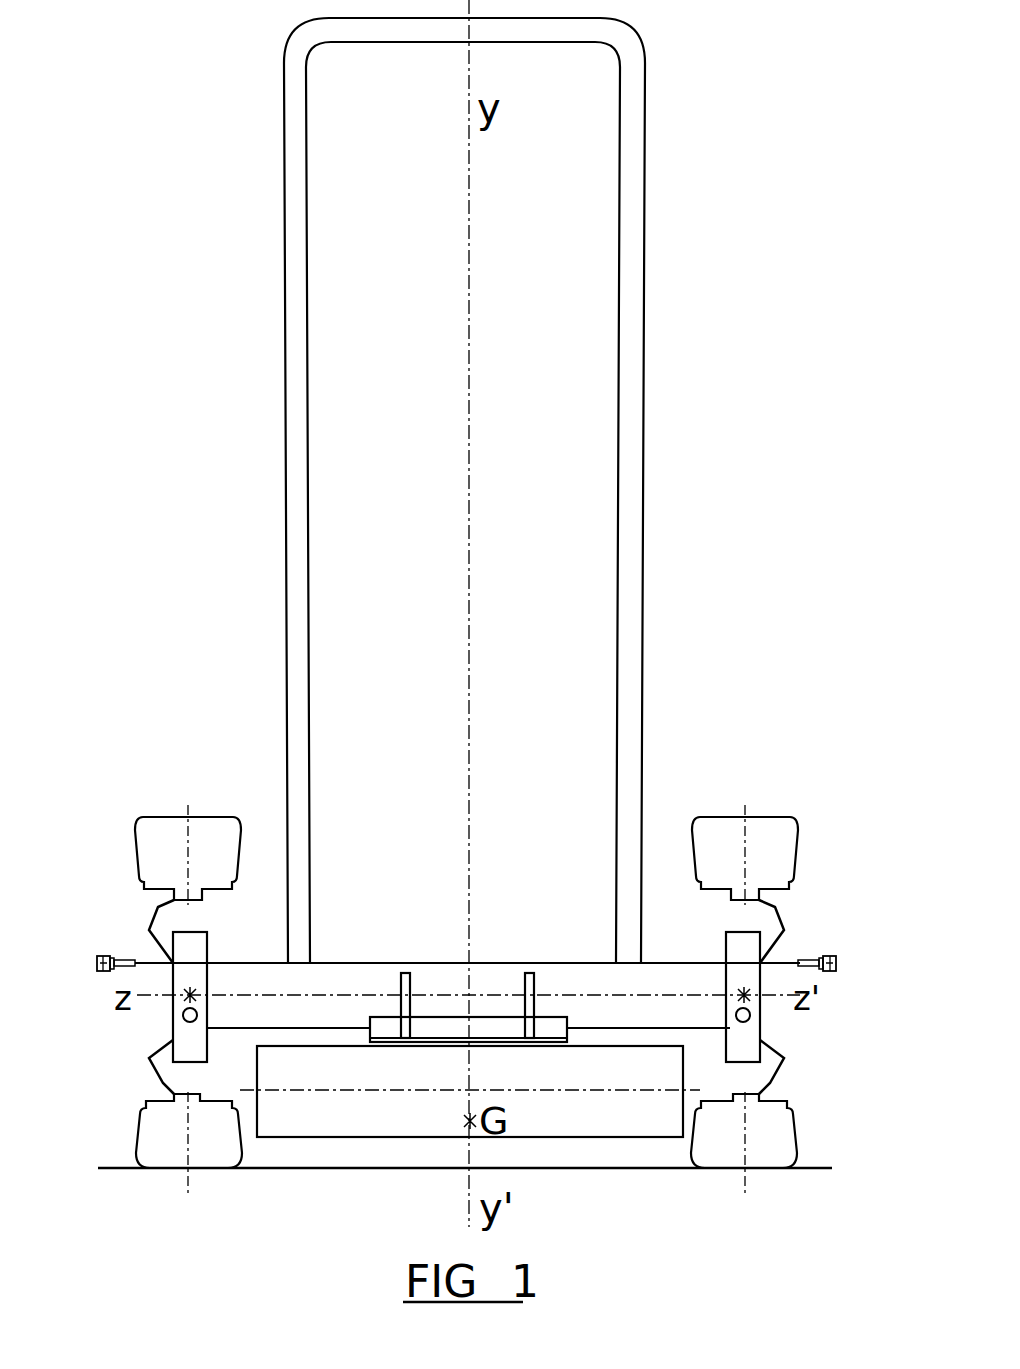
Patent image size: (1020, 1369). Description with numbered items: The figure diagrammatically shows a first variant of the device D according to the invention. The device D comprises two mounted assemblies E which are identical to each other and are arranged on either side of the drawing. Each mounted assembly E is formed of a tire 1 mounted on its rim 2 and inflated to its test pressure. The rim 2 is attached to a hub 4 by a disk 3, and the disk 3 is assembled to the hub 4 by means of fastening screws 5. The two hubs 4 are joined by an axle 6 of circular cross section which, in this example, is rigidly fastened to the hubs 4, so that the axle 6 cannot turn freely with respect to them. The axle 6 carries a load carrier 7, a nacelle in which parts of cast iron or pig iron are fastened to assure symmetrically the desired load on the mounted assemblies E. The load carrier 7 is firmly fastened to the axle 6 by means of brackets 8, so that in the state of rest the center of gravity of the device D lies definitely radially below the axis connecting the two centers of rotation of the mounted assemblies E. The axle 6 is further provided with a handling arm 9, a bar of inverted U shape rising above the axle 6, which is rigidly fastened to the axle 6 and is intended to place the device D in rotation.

The tire 1 is at (199, 832).
The rim 2 is at (768, 892).
The disk 3 is at (150, 932).
The hub 4 is at (205, 952).
The fastening screws 5 is at (97, 964).
The axle 6 is at (338, 972).
The load carrier 7 is at (372, 1133).
The brackets 8 is at (515, 962).
The handling arm 9 is at (301, 553).
The device D is at (215, 383).
The mounted assemblies E is at (160, 785).